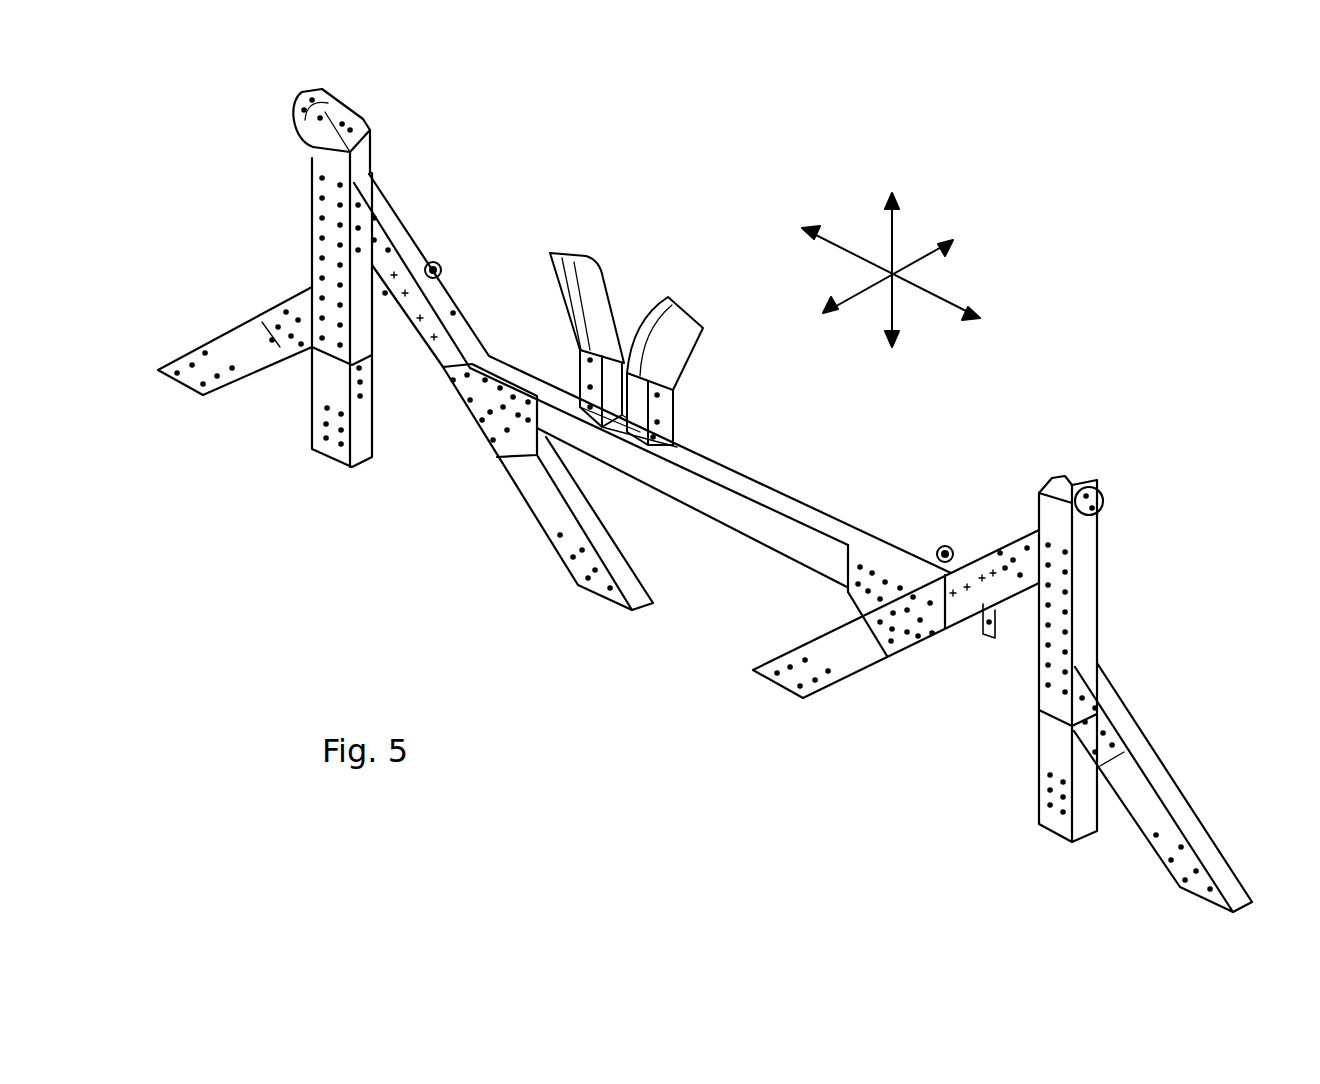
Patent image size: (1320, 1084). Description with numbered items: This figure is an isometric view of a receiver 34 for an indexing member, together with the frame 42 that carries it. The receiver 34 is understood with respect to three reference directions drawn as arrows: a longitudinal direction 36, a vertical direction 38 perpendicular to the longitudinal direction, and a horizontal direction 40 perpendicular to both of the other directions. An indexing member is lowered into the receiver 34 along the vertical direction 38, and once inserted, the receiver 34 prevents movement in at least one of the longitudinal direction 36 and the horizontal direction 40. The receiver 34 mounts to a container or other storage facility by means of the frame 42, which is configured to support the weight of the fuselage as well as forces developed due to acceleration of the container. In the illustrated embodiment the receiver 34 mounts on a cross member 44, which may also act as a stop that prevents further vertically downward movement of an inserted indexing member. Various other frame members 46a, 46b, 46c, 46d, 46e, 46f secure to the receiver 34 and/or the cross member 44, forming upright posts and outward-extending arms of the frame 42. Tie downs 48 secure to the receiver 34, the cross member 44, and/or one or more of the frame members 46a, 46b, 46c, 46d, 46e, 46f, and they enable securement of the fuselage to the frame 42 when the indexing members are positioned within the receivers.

The receiver 34 is at (713, 358).
The longitudinal direction 36 is at (855, 252).
The vertical direction 38 is at (893, 235).
The horizontal direction 40 is at (848, 298).
The frame 42 is at (380, 513).
The cross member 44 is at (695, 500).
The frame member 46a is at (240, 337).
The frame member 46b is at (357, 433).
The frame member 46c is at (540, 492).
The frame member 46d is at (845, 656).
The frame member 46e is at (1048, 748).
The frame member 46f is at (1140, 775).
The tie down 48 is at (442, 268).